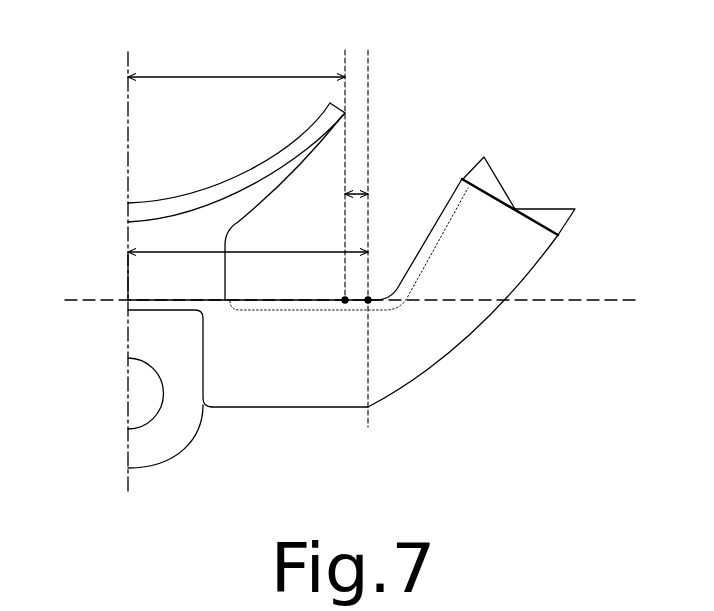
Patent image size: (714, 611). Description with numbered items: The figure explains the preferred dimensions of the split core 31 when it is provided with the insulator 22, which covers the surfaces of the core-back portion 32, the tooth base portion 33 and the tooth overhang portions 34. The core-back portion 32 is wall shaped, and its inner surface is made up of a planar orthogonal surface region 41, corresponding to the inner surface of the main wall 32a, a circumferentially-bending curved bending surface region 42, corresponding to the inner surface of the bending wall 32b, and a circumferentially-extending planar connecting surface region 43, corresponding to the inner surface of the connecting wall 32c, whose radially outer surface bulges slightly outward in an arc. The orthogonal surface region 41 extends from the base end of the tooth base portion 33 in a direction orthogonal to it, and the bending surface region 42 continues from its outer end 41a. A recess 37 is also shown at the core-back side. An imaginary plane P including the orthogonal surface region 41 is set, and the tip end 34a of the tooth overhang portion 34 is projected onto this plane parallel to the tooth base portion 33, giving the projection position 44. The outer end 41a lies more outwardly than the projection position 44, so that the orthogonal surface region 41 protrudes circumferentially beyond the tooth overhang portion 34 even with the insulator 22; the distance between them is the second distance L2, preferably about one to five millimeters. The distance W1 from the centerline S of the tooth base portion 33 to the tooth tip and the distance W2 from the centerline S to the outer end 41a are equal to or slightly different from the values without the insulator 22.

The insulator 22 is at (467, 316).
The split core 31 is at (90, 359).
The core-back portion 32 is at (187, 395).
The main wall 32a is at (316, 378).
The bending wall 32b is at (390, 373).
The connecting wall 32c is at (522, 252).
The tooth base portion 33 is at (146, 272).
The tooth overhang portion 34 is at (272, 172).
The tip end of tooth overhang portion 34a is at (345, 110).
The semicircular recess 37 is at (140, 420).
The orthogonal surface region 41 is at (277, 295).
The outer end of orthogonal surface region 41a is at (369, 299).
The bending surface region 42 is at (388, 287).
The connecting surface region 43 is at (453, 208).
The projection position 44 is at (344, 299).
The centerline S is at (126, 93).
The imaginary plane P is at (622, 300).
The second distance L2 is at (362, 190).
The distance W1' W1 is at (236, 175).
The distance W2' W2 is at (248, 238).